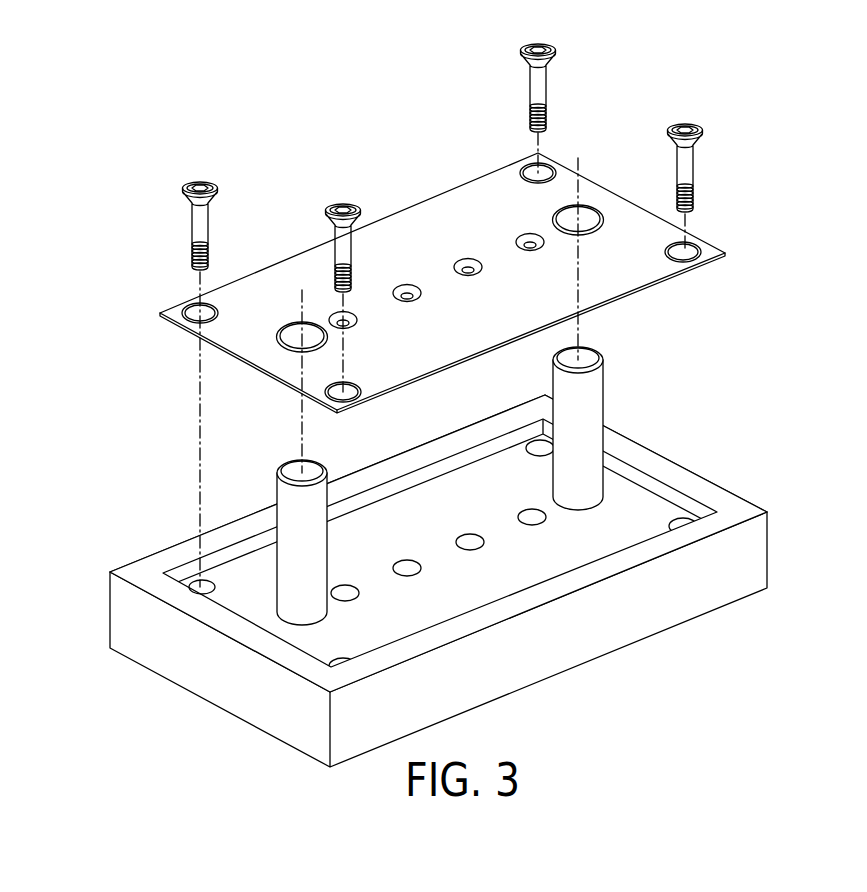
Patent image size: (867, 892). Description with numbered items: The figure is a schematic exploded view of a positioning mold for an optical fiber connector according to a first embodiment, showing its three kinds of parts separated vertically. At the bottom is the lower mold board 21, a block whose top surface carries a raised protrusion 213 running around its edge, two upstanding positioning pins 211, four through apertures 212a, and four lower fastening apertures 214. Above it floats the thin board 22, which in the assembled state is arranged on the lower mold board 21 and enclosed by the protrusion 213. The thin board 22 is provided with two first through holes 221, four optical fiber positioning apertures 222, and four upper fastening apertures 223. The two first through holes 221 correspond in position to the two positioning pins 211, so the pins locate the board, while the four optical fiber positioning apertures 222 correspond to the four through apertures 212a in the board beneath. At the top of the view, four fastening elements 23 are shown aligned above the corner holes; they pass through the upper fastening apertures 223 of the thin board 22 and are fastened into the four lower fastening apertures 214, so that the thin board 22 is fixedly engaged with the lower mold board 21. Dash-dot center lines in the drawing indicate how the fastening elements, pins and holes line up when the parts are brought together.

The lower mold board 21 is at (753, 548).
The positioning pin 211 is at (593, 398).
The through aperture 212a is at (407, 567).
The protrusion 213 is at (683, 480).
The lower fastening aperture 214 is at (197, 585).
The thin board 22 is at (427, 275).
The first through hole 221 is at (587, 217).
The optical fiber positioning aperture 222 is at (407, 292).
The upper fastening aperture 223 is at (193, 310).
The fastening element 23 is at (198, 223).